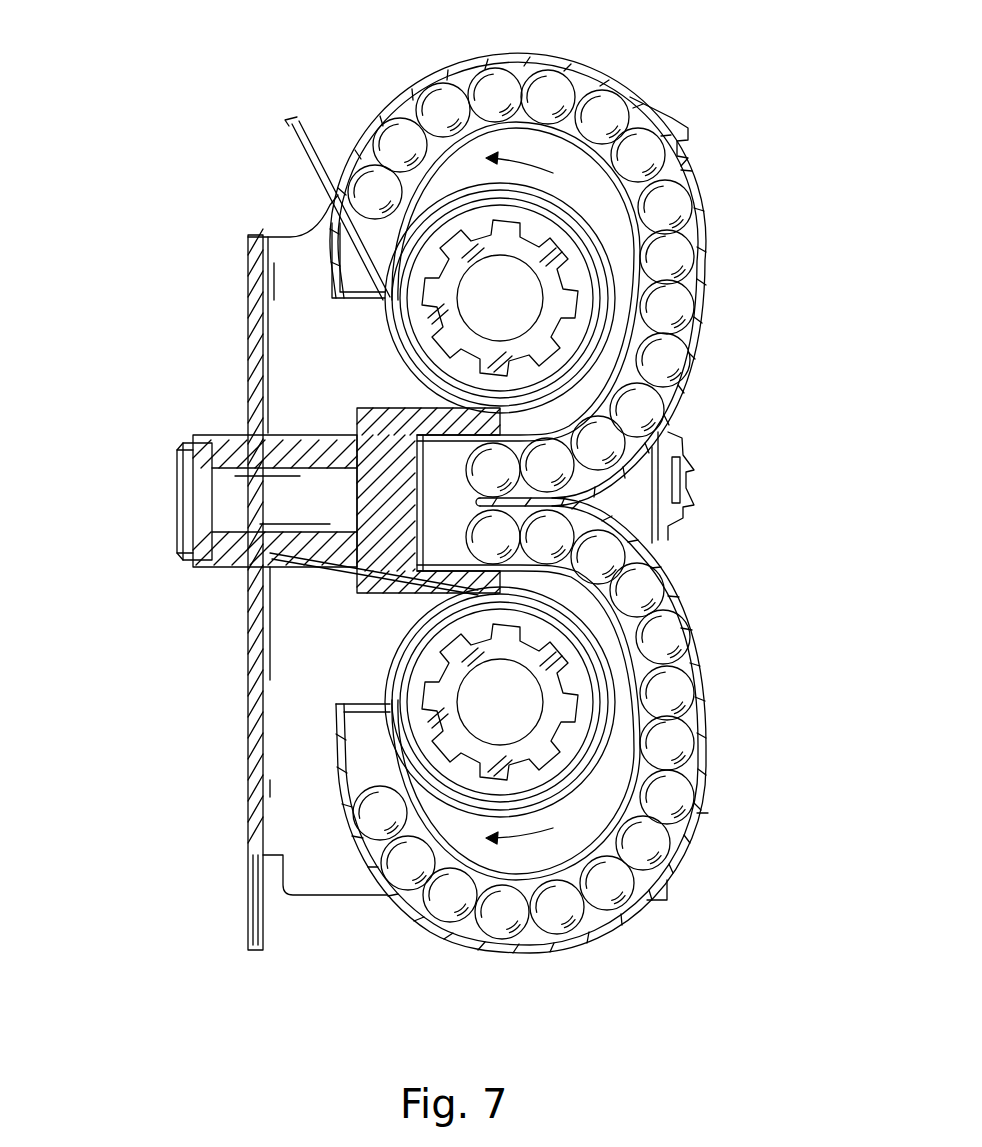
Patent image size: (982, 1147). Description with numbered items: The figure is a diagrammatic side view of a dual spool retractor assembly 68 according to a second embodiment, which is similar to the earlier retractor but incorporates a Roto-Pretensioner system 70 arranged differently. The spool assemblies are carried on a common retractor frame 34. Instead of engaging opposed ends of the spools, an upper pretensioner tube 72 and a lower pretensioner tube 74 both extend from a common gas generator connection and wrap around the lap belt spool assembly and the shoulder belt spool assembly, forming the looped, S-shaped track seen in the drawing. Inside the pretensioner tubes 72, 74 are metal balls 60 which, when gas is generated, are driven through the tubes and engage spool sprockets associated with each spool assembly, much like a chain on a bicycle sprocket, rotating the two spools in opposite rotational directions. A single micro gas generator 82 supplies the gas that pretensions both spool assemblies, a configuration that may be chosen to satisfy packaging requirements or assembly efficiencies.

The retractor frame 34 is at (340, 896).
The balls 60 is at (663, 362).
The dual spool retractor assembly 68 is at (609, 282).
The Roto-Pretensioner system 70 is at (752, 620).
The upper pretensioner tube 72 is at (578, 62).
The lower pretensioner tube 74 is at (698, 805).
The micro gas generator 82 is at (183, 470).